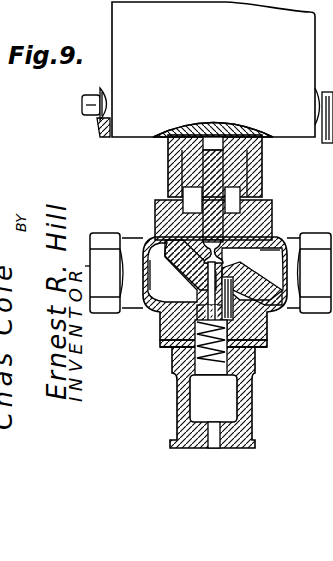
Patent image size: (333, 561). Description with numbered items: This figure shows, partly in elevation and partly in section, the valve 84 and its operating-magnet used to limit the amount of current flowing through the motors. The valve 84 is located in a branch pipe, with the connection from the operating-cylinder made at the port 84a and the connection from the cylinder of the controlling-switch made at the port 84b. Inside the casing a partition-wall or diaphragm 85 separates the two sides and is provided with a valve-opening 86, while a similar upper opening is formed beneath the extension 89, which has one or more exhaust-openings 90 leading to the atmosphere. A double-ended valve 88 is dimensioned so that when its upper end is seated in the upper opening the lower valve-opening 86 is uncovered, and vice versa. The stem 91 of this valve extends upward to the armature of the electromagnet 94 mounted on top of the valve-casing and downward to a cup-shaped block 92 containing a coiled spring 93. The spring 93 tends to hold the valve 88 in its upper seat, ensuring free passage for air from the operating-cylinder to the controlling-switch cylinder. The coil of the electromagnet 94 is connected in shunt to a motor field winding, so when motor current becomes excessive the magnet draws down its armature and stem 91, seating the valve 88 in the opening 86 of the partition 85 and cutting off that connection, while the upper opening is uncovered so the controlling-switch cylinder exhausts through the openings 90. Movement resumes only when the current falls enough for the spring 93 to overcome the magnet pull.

The electromagnet 94 is at (207, 72).
The extension 89 is at (262, 162).
The exhaust-openings 90 is at (168, 203).
The valve 84 is at (181, 190).
The connection from the operating-cylinder 84a is at (114, 273).
The connection from the controlling-switch cylinder 84b is at (309, 273).
The partition-wall 85 is at (162, 275).
The valve-opening 86 is at (222, 272).
The double-ended valve 88 is at (208, 254).
The stem 91 is at (211, 284).
The cup-shaped block 92 is at (230, 298).
The coiled spring 93 is at (258, 352).